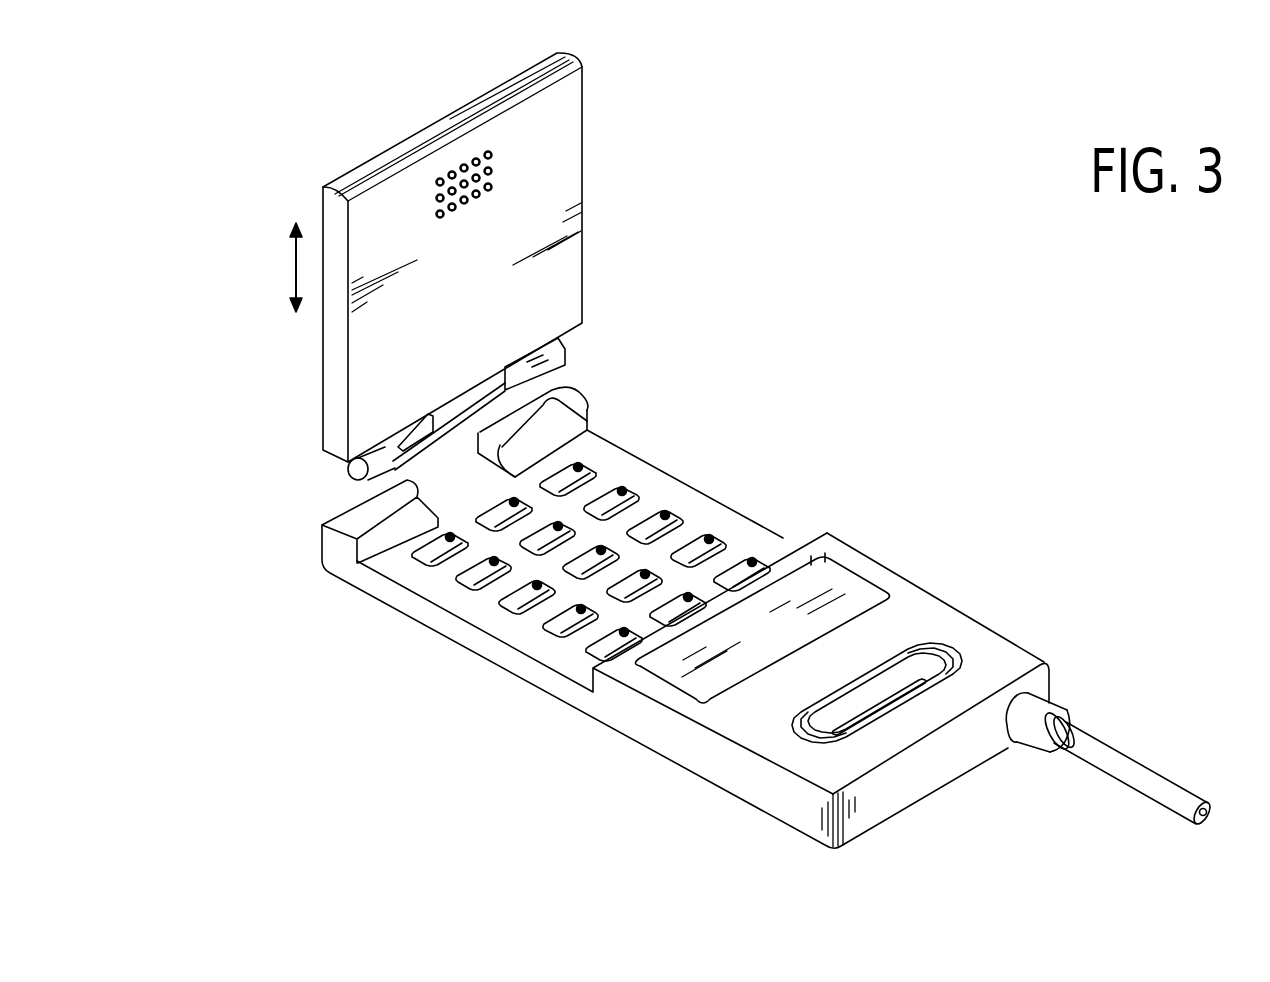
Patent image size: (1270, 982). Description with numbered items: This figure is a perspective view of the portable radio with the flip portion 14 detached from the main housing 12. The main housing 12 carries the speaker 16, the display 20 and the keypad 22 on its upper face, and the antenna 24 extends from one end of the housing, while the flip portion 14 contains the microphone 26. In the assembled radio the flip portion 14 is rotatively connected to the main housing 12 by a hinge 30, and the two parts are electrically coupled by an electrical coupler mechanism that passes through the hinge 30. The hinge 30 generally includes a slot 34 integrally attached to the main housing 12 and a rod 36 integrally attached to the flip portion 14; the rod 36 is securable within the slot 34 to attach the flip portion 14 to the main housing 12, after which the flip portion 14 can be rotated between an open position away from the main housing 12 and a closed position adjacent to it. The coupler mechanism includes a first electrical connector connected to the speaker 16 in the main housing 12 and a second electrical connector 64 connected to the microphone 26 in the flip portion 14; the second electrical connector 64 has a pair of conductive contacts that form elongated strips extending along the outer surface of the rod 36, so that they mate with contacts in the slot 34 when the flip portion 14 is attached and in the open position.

The main housing 12 is at (587, 725).
The flip portion 14 is at (594, 169).
The speaker 16 is at (937, 678).
The display 20 is at (860, 593).
The keypad 22 is at (688, 502).
The antenna 24 is at (1132, 744).
The microphone 26 is at (457, 149).
The hinge 30 is at (336, 466).
The slot 34 is at (591, 389).
The rod 36 is at (583, 341).
The second electrical connector 64 is at (384, 483).